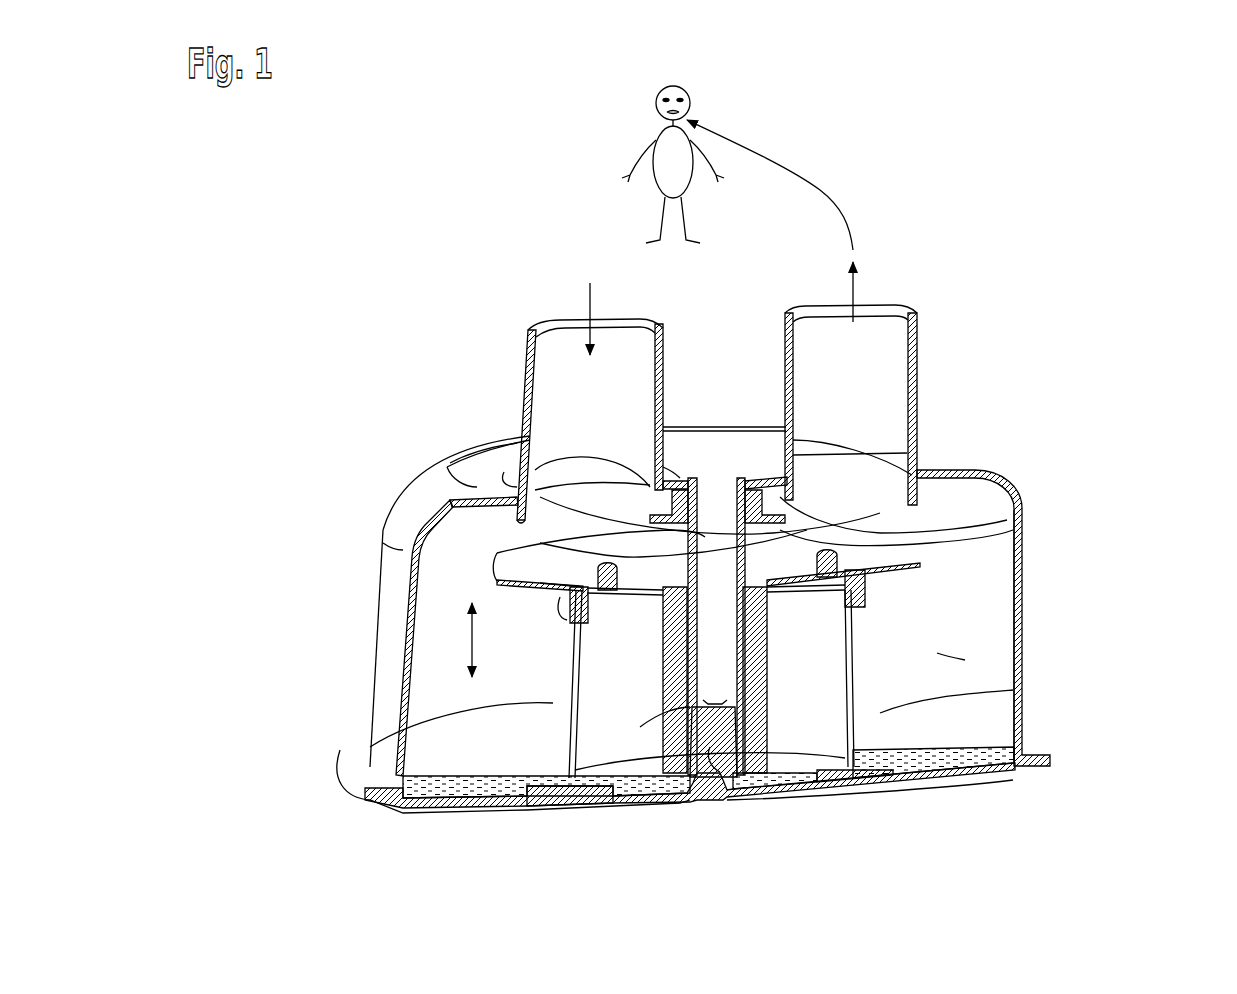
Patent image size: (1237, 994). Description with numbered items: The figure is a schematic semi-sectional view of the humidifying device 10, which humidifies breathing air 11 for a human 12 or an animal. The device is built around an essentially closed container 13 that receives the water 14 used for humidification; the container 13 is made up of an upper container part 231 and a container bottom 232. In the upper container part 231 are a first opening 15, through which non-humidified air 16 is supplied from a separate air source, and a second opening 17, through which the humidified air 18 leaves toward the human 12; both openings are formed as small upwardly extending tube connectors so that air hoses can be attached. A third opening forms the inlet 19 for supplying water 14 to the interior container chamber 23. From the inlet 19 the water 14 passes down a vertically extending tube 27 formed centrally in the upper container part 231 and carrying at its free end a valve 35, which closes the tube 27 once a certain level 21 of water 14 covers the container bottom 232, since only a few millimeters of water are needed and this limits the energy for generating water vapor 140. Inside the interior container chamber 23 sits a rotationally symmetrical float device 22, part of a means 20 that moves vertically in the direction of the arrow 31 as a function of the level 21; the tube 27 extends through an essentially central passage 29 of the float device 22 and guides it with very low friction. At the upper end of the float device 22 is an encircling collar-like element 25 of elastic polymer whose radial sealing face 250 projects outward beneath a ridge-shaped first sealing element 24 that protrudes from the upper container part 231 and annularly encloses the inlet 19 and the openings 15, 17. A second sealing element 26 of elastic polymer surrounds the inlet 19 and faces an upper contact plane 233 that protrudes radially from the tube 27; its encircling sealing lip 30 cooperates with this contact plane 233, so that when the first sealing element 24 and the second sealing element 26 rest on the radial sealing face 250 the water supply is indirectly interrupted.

The humidifying device 10 is at (1048, 283).
The breathing air 11 is at (590, 300).
The human 12 is at (685, 171).
The container 13 is at (1028, 610).
The water 14 is at (717, 527).
The first opening 15 is at (553, 373).
The non-humidified air 16 is at (528, 299).
The second opening 17 is at (890, 371).
The humidified air 18 is at (915, 283).
The inlet 19 is at (728, 487).
The means 20 is at (327, 649).
The level 21 is at (908, 745).
The float device 22 is at (850, 640).
The interior container chamber 23 is at (937, 653).
The first sealing element 24 is at (450, 503).
The collar-like element 25 is at (863, 560).
The second sealing element 26 is at (780, 483).
The tube 27 is at (760, 773).
The central passage 29 is at (672, 710).
The sealing lip 30 is at (875, 548).
The arrow 31 is at (467, 643).
The valve 35 is at (710, 780).
The water vapor 140 is at (1052, 659).
The upper container part 231 is at (447, 467).
The container bottom 232 is at (843, 767).
The upper contact plane 233 is at (633, 573).
The radial sealing face 250 is at (524, 570).